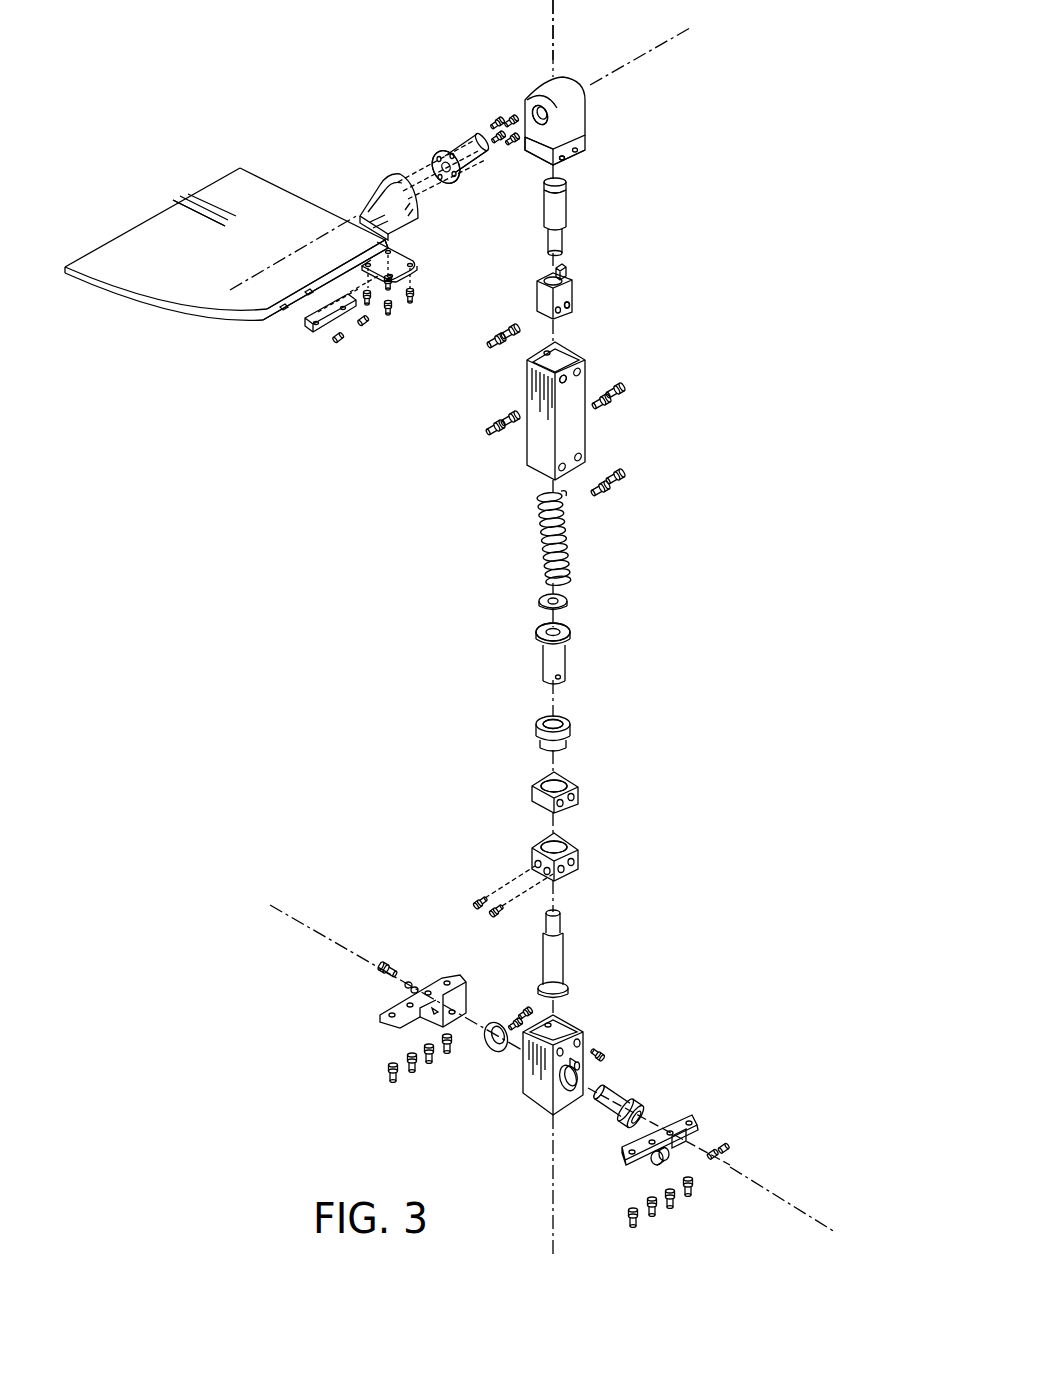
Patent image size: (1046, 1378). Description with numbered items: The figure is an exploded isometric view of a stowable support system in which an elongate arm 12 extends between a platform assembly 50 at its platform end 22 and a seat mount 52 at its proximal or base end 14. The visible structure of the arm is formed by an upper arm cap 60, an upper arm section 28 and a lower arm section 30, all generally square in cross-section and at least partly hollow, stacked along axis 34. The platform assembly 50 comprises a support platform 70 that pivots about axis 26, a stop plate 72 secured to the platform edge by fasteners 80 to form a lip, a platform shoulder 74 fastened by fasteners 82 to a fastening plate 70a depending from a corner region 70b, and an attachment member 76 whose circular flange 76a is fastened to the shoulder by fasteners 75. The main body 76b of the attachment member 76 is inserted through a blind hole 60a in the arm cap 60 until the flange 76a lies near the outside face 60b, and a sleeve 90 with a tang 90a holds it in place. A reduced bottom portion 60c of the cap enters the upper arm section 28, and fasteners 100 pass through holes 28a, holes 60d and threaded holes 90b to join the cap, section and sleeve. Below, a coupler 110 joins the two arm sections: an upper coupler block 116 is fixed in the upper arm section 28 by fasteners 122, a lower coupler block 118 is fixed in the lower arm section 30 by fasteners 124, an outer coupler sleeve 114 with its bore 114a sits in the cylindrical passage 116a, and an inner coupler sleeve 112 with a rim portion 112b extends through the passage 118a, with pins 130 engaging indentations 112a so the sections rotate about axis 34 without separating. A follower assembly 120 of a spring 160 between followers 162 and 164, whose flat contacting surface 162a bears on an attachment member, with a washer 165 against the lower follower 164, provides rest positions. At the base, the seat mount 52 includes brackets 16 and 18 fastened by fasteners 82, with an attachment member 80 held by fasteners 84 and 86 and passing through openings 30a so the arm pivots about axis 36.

The arm 12 is at (712, 568).
The proximal end 14 is at (512, 1076).
The bracket 16 is at (682, 1120).
The bracket 18 is at (395, 1010).
The platform end 22 is at (602, 88).
The axis 26 is at (255, 265).
The upper arm section 28 is at (580, 368).
The holes 28a is at (566, 382).
The lower arm section 30 is at (535, 1097).
The openings 30a is at (578, 1086).
The axis 34 is at (556, 40).
The axis 36 is at (800, 1208).
The platform assembly 50 is at (195, 70).
The seat mount 52 is at (694, 1082).
The upper arm cap 60 is at (574, 118).
The blind hole 60a is at (584, 140).
The outside face 60b is at (535, 107).
The bottom portion 60c is at (568, 160).
The holes 60d is at (545, 165).
The support platform 70 is at (128, 287).
The fastening plate 70a is at (398, 258).
The corner region 70b is at (345, 252).
The stop plate 72 is at (310, 324).
The platform shoulder 74 is at (376, 200).
The fasteners 75 is at (498, 118).
The attachment member 76 is at (461, 138).
The circular flange 76a is at (443, 153).
The main body 76b is at (470, 172).
The fasteners / attachment member 80 is at (338, 338).
The fasteners 82 is at (392, 316).
The fasteners 84 is at (716, 1150).
The fasteners 86 is at (395, 968).
The sleeve 90 is at (576, 296).
The tang 90a is at (567, 270).
The threaded holes 90b is at (571, 305).
The fasteners 100 is at (618, 392).
The coupler 110 is at (668, 893).
The inner coupler sleeve 112 is at (534, 657).
The indentations 112a is at (562, 678).
The rim portion 112b is at (572, 628).
The outer coupler sleeve 114 is at (530, 733).
The bushing bore 114a is at (565, 719).
The upper coupler block 116 is at (530, 788).
The cylindrical passage 116a is at (548, 785).
The lower coupler block 118 is at (532, 840).
The cylindrical passage 118a is at (548, 845).
The follower assembly 120 is at (672, 595).
The fasteners 122 is at (619, 476).
The fasteners 124 is at (598, 1045).
The pins 130 is at (486, 905).
The spring 160 is at (570, 545).
The follower 162 is at (568, 187).
The contacting surface 162a is at (557, 212).
The follower 164 is at (557, 958).
The washer 165 is at (548, 592).